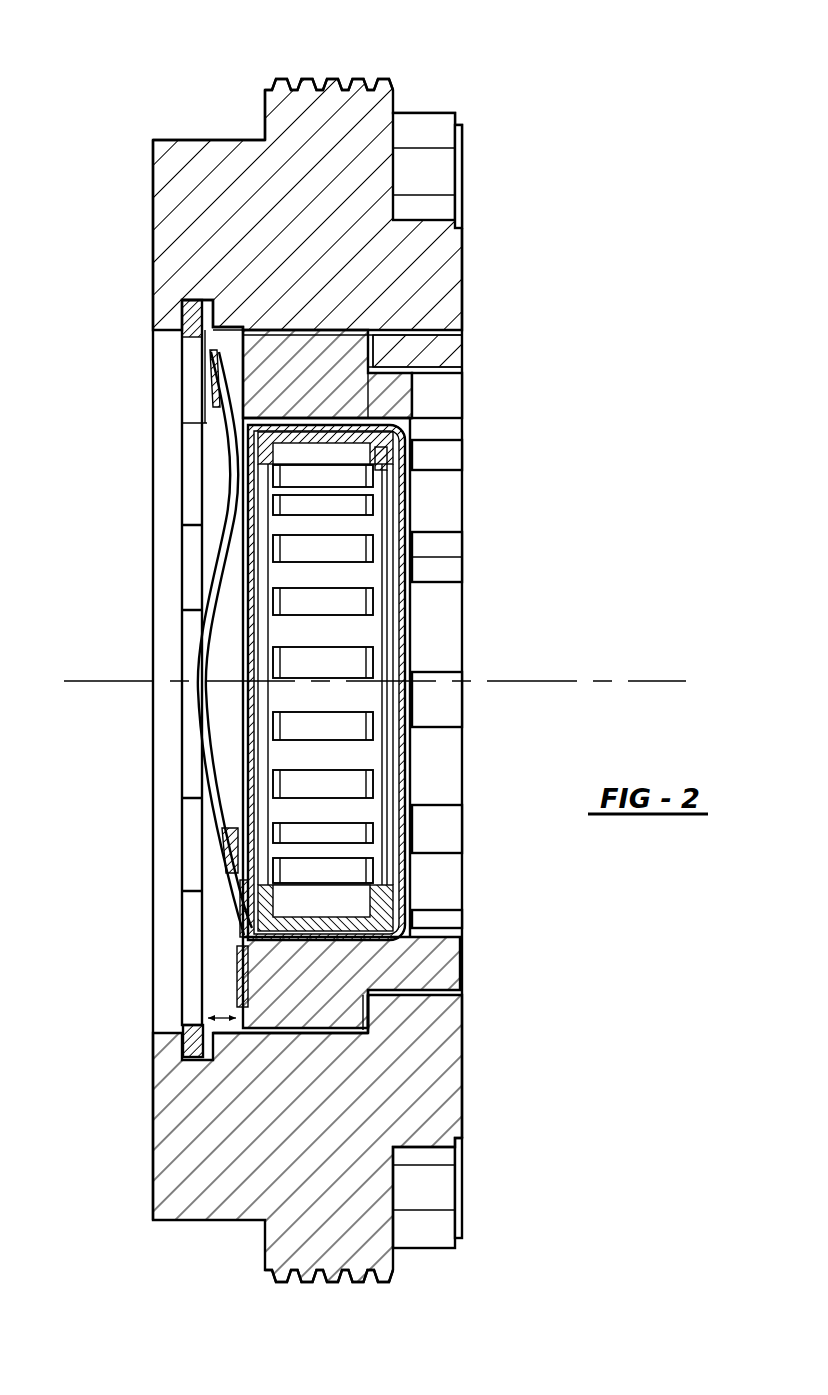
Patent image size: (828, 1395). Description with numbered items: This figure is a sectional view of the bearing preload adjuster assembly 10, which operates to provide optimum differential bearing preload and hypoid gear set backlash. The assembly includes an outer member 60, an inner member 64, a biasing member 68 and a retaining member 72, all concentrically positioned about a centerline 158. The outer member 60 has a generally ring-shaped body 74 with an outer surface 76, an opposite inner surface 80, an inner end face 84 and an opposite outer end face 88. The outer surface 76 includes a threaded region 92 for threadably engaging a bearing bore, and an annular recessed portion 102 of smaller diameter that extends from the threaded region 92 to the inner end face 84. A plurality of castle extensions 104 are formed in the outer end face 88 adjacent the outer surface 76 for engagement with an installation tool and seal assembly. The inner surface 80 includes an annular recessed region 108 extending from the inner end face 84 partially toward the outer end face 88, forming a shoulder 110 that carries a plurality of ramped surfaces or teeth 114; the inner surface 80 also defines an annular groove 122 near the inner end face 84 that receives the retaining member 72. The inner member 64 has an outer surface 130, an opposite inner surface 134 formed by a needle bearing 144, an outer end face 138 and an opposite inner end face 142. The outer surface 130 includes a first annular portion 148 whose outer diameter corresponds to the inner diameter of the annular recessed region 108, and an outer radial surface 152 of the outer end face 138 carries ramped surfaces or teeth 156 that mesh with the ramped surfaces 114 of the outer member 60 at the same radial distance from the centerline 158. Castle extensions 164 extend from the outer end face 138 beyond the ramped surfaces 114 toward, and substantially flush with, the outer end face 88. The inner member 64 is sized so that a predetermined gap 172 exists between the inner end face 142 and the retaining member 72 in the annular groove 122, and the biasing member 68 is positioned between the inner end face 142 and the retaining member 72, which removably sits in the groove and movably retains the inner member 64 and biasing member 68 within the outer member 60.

The bearing preload adjuster assembly 10 is at (492, 105).
The outer member 60 is at (470, 228).
The inner member 64 is at (470, 975).
The biasing member 68 is at (245, 412).
The retaining member 72 is at (192, 960).
The ring-shaped body 74 is at (182, 168).
The outer surface 76 is at (262, 83).
The inner surface 80 is at (440, 1031).
The inner end face 84 is at (150, 202).
The outer end face 88 is at (462, 297).
The threaded region 92 is at (331, 83).
The annular recessed portion 102 is at (217, 140).
The castle extensions 104 is at (462, 167).
The annular recessed region 108 is at (276, 328).
The shoulder 110 is at (372, 342).
The ramped surfaces or teeth 114 is at (372, 356).
The annular groove 122 is at (212, 1062).
The outer surface 130 is at (240, 373).
The inner surface 134 is at (315, 882).
The outer end face 138 is at (363, 373).
The inner end face 142 is at (240, 343).
The needle bearing 144 is at (330, 757).
The first annular portion 148 is at (300, 340).
The outer radial surface 152 is at (368, 1027).
The ramped surfaces or teeth 156 is at (365, 1030).
The centerline 158 is at (565, 680).
The castle extensions 164 is at (448, 397).
The gap 172 is at (222, 1025).